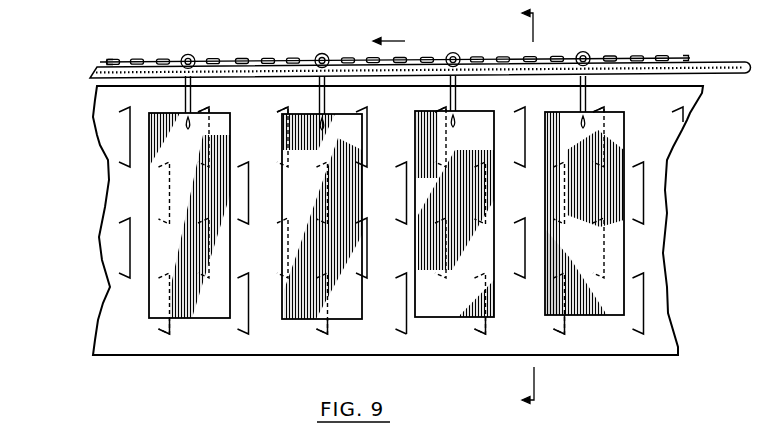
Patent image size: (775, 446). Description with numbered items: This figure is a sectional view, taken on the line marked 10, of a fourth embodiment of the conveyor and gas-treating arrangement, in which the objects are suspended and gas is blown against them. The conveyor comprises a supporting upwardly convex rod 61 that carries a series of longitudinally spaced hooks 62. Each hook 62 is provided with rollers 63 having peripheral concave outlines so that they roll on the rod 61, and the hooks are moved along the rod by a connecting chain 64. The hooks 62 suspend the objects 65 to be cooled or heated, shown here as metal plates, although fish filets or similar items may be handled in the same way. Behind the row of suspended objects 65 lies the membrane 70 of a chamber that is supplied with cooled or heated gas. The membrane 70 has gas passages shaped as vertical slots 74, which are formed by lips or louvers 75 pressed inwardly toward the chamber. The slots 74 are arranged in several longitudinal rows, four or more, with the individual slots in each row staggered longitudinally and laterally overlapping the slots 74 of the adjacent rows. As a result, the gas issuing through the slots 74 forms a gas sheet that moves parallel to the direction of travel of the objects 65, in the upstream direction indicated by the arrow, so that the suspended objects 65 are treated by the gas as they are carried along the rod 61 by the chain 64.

The section line indicator 10 is at (515, 207).
The supporting upwardly convex rod 61 is at (723, 63).
The hooks 62 is at (185, 97).
The rollers 63 is at (322, 54).
The connecting chain 64 is at (655, 56).
The objects 65 is at (228, 142).
The membrane 70 is at (275, 352).
The vertical slots 74 is at (400, 302).
The lips or louvers 75 is at (409, 331).